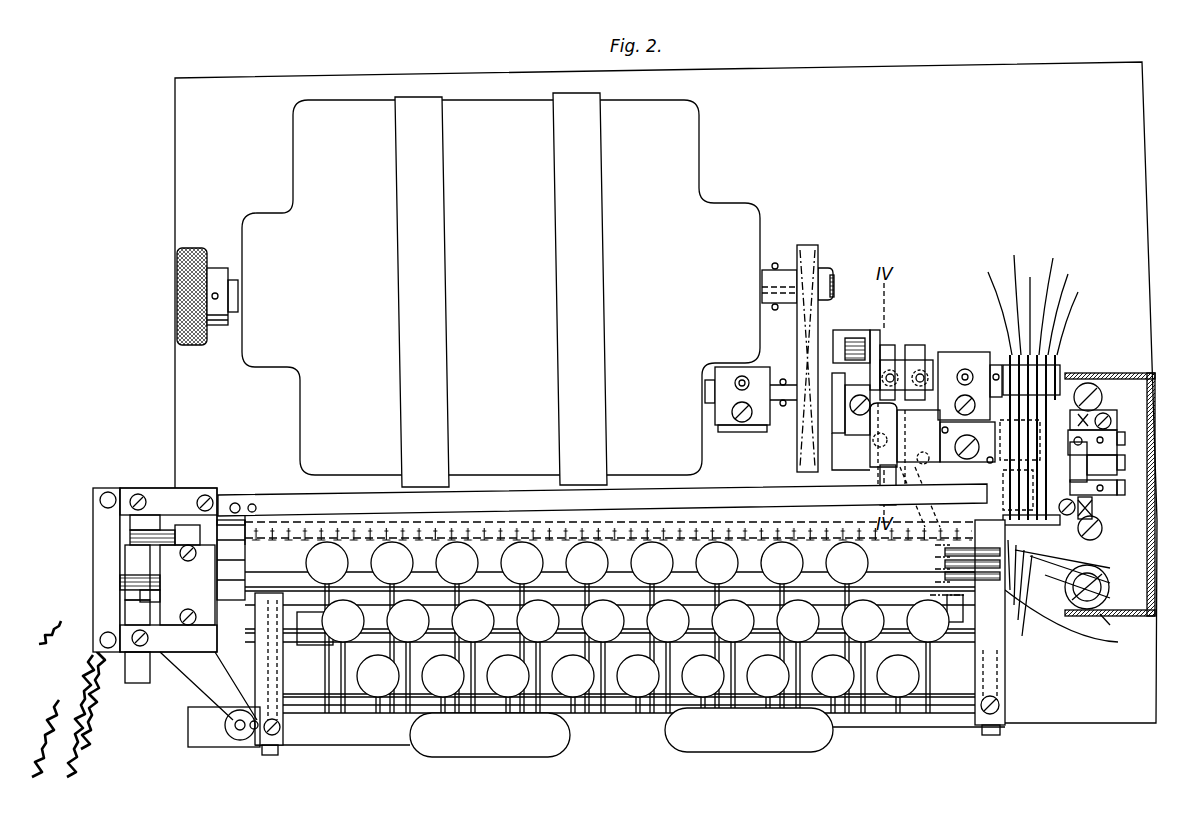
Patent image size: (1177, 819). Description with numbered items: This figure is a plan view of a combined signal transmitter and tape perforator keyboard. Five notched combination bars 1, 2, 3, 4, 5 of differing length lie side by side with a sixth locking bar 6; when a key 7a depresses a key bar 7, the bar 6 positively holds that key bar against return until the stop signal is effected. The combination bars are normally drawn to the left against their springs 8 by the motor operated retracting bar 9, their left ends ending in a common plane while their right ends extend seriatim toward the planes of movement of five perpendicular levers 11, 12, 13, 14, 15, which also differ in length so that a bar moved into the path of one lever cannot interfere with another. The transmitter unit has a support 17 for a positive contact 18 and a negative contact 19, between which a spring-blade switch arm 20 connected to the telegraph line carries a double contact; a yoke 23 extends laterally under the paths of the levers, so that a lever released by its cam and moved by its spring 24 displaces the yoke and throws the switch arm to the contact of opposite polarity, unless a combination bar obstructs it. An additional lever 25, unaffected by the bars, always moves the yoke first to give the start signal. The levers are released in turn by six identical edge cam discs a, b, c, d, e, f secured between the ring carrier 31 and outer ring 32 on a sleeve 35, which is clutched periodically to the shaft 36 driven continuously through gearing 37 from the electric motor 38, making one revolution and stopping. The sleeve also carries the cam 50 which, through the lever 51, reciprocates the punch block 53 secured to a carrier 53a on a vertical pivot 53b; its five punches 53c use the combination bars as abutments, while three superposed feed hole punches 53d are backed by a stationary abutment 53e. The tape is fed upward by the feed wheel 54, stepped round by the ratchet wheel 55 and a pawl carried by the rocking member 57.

The combination bar 1 is at (752, 588).
The combination bar 2 is at (683, 580).
The combination bar 3 is at (621, 575).
The combination bar 4 is at (422, 548).
The combination bar 5 is at (298, 548).
The locking bar 6 is at (368, 548).
The key bar 7 is at (458, 650).
The key 7a is at (638, 648).
The spring 8 is at (975, 585).
The retracting bar 9 is at (922, 478).
The lever 11 is at (1120, 625).
The lever 12 is at (1089, 587).
The lever 13 is at (1082, 575).
The lever 14 is at (1074, 564).
The lever 15 is at (1072, 621).
The support 17 is at (1088, 445).
The positive contact 18 is at (1100, 410).
The negative contact 19 is at (1110, 482).
The switch arm 20 is at (1108, 440).
The yoke 23 is at (1092, 512).
The spring 24 is at (1102, 532).
The lever 25 is at (1050, 530).
The ring carrier 31 is at (996, 362).
The outer ring 32 is at (1060, 368).
The sleeve 35 is at (915, 362).
The shaft 36 is at (707, 393).
The gearing 37 is at (806, 246).
The electric motor 38 is at (501, 290).
The cam 50 is at (888, 345).
The lever 51 is at (882, 465).
The punch block 53 is at (103, 500).
The carrier 53a is at (230, 705).
The vertical pivot 53b is at (228, 722).
The punch 53c is at (240, 505).
The feed hole punch 53d is at (140, 597).
The stationary abutment 53e is at (255, 520).
The feed wheel 54 is at (120, 580).
The ratchet wheel 55 is at (140, 515).
The rocking member 57 is at (150, 525).
The cam member a is at (1070, 314).
The cam member b is at (1061, 304).
The cam member c is at (1048, 295).
The cam member d is at (1024, 305).
The cam member e is at (1013, 294).
The cam member f is at (993, 303).